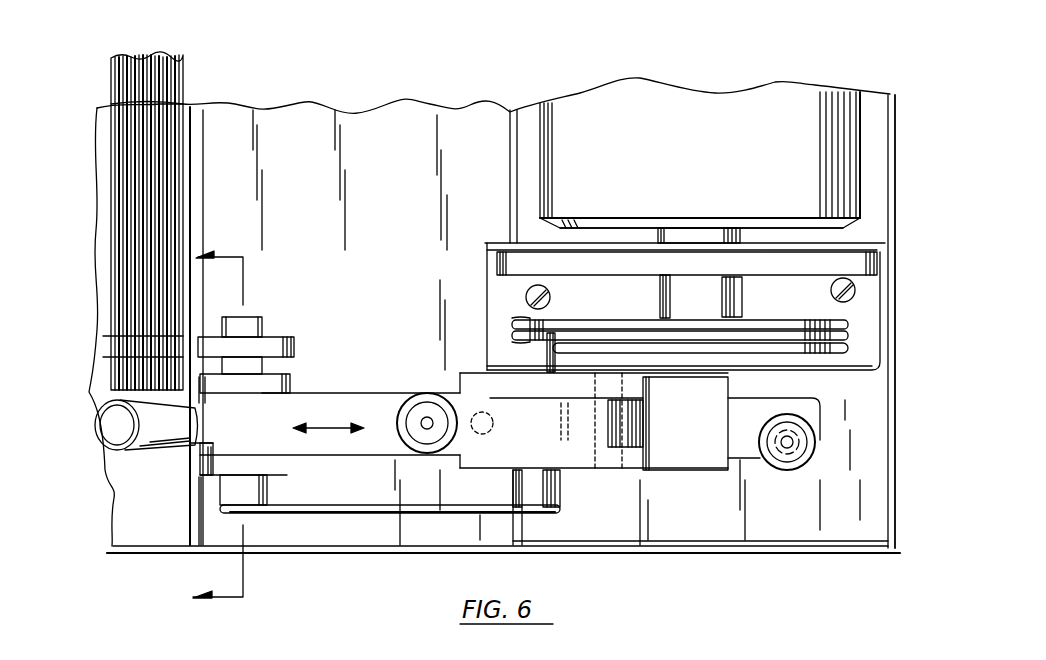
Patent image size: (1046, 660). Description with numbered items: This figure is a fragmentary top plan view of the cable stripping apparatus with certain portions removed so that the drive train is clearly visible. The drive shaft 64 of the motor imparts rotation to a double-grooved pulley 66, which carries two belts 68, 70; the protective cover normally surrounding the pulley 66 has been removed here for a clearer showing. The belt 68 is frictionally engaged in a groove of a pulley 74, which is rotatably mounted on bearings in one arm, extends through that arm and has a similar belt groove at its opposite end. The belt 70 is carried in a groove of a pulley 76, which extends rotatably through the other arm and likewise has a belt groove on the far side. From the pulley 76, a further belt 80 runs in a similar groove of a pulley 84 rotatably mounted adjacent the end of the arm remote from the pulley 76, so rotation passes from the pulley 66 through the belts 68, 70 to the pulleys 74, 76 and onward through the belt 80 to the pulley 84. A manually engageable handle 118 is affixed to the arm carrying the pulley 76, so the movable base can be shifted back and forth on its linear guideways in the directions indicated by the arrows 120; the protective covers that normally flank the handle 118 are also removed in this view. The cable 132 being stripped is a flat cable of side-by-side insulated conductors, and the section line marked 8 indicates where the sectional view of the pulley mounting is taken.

The cable 132 is at (133, 225).
The handle 118 is at (112, 398).
The section line 8- 8 is at (218, 429).
The arrows 120 is at (330, 426).
The pulley 74 is at (520, 322).
The pulley 76 is at (525, 362).
The drive shaft 64 is at (680, 300).
The double-grooved pulley 66 is at (798, 318).
The belt 68 is at (855, 326).
The belt 70 is at (855, 337).
The pulley 84 is at (253, 488).
The belt 80 is at (383, 507).